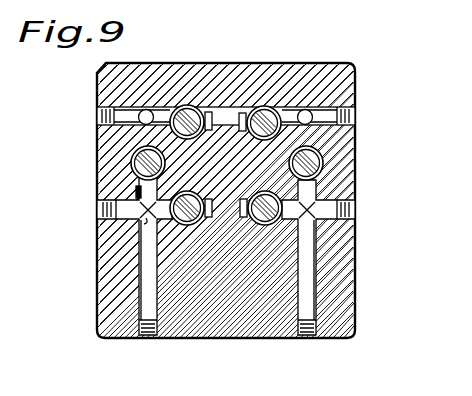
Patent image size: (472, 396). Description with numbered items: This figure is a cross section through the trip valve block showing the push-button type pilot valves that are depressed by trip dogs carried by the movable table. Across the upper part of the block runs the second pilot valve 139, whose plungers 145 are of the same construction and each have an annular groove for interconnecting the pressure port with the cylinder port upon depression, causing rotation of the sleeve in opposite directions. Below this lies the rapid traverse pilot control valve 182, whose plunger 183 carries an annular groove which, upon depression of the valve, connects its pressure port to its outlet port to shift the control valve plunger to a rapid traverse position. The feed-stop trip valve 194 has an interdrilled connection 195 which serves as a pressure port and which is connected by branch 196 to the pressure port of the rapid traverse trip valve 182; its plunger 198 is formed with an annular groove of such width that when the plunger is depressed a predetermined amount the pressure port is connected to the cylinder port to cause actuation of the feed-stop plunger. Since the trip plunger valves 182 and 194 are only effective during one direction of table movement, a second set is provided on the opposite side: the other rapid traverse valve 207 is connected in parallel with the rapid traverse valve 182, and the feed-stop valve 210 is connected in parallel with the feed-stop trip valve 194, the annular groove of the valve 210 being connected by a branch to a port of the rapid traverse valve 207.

The second pilot valve 139 is at (203, 106).
The plungers 145 is at (202, 105).
The rapid traverse pilot control valve 182 is at (135, 151).
The plunger 183 is at (132, 163).
The feed-stop trip valve 194 is at (196, 228).
The interdrilled connection 195 is at (138, 228).
The branch 196 is at (134, 190).
The plunger 198 is at (178, 228).
The rapid traverse valve 207 is at (324, 157).
The feed-stop valve 210 is at (268, 226).